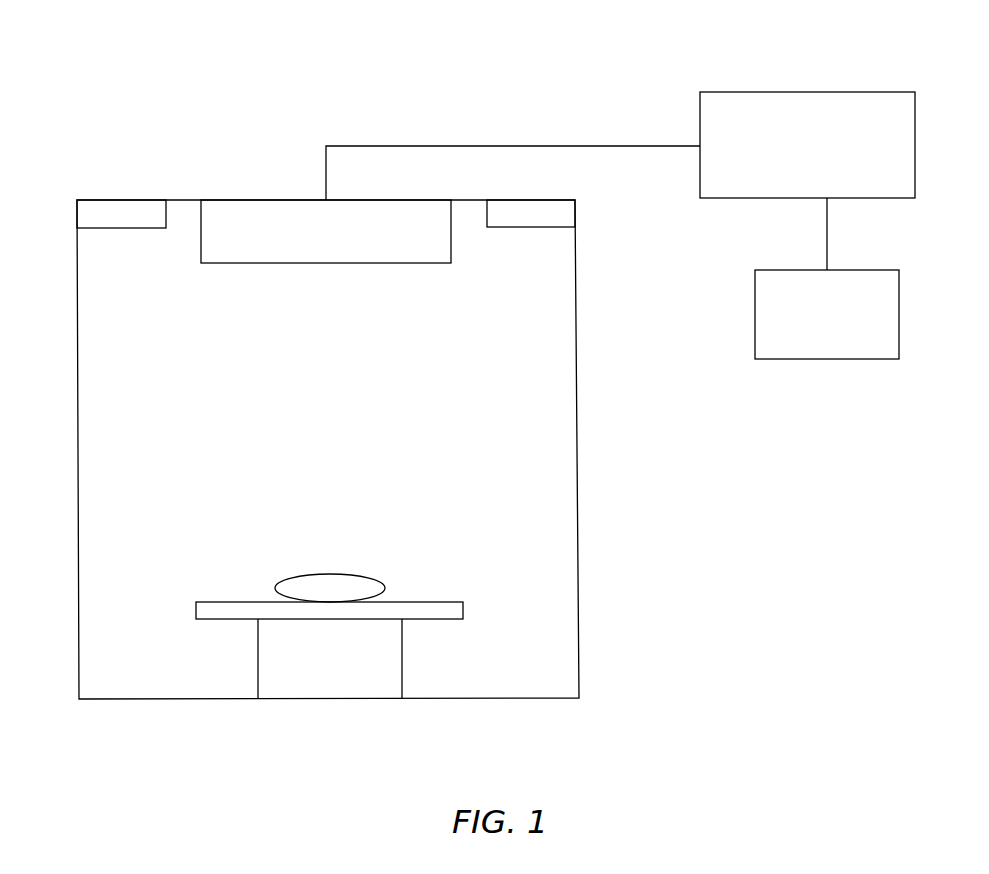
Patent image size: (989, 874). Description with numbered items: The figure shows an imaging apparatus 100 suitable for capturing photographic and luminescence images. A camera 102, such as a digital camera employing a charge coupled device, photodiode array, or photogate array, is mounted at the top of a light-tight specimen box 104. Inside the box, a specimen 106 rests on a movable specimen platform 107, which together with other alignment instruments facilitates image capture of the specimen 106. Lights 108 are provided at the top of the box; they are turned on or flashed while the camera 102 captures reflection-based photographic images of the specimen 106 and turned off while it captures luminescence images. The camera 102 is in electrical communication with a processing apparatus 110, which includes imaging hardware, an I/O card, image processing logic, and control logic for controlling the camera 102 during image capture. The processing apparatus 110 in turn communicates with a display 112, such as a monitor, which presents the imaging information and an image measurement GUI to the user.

The imaging apparatus 100 is at (122, 87).
The camera 102 is at (451, 256).
The light-tight specimen box 104 is at (577, 557).
The specimen 106 is at (379, 583).
The movable specimen platform 107 is at (464, 608).
The lights 108 is at (80, 216).
The processing apparatus 110 is at (700, 113).
The display 112 is at (755, 292).